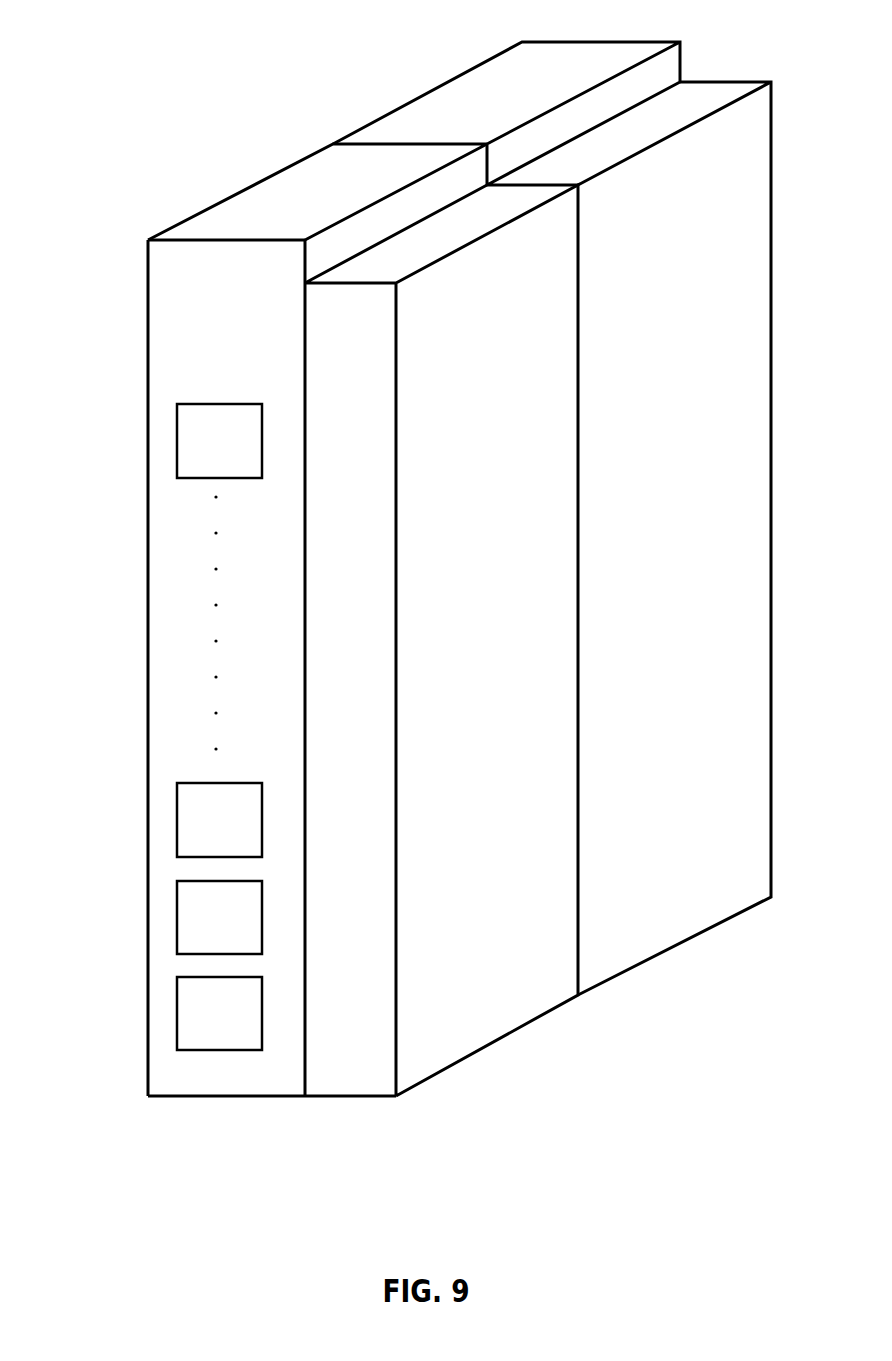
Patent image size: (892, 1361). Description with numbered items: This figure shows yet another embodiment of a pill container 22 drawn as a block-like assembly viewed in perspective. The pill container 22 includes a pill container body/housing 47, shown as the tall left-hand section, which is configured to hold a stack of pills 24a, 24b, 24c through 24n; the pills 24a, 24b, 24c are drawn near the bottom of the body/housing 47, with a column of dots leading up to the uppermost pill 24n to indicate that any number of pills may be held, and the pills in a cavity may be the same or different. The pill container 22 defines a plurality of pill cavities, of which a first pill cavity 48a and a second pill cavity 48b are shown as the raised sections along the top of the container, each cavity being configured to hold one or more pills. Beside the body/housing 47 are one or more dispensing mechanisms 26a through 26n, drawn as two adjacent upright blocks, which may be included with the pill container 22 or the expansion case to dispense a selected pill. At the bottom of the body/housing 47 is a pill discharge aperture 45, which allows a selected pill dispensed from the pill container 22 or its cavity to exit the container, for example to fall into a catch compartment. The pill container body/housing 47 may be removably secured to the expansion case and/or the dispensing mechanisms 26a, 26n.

The pill container 22 is at (486, 23).
The pill container body/housing 47 is at (146, 657).
The pill discharge aperture 45 is at (224, 1100).
The pill cavity 48a is at (357, 193).
The pill cavity 48b is at (554, 83).
The dispensing mechanism 26a is at (473, 555).
The dispensing mechanism 26n is at (656, 436).
The pill 24n is at (205, 461).
The pill 24c is at (205, 840).
The pill 24b is at (205, 938).
The pill 24a is at (205, 1034).